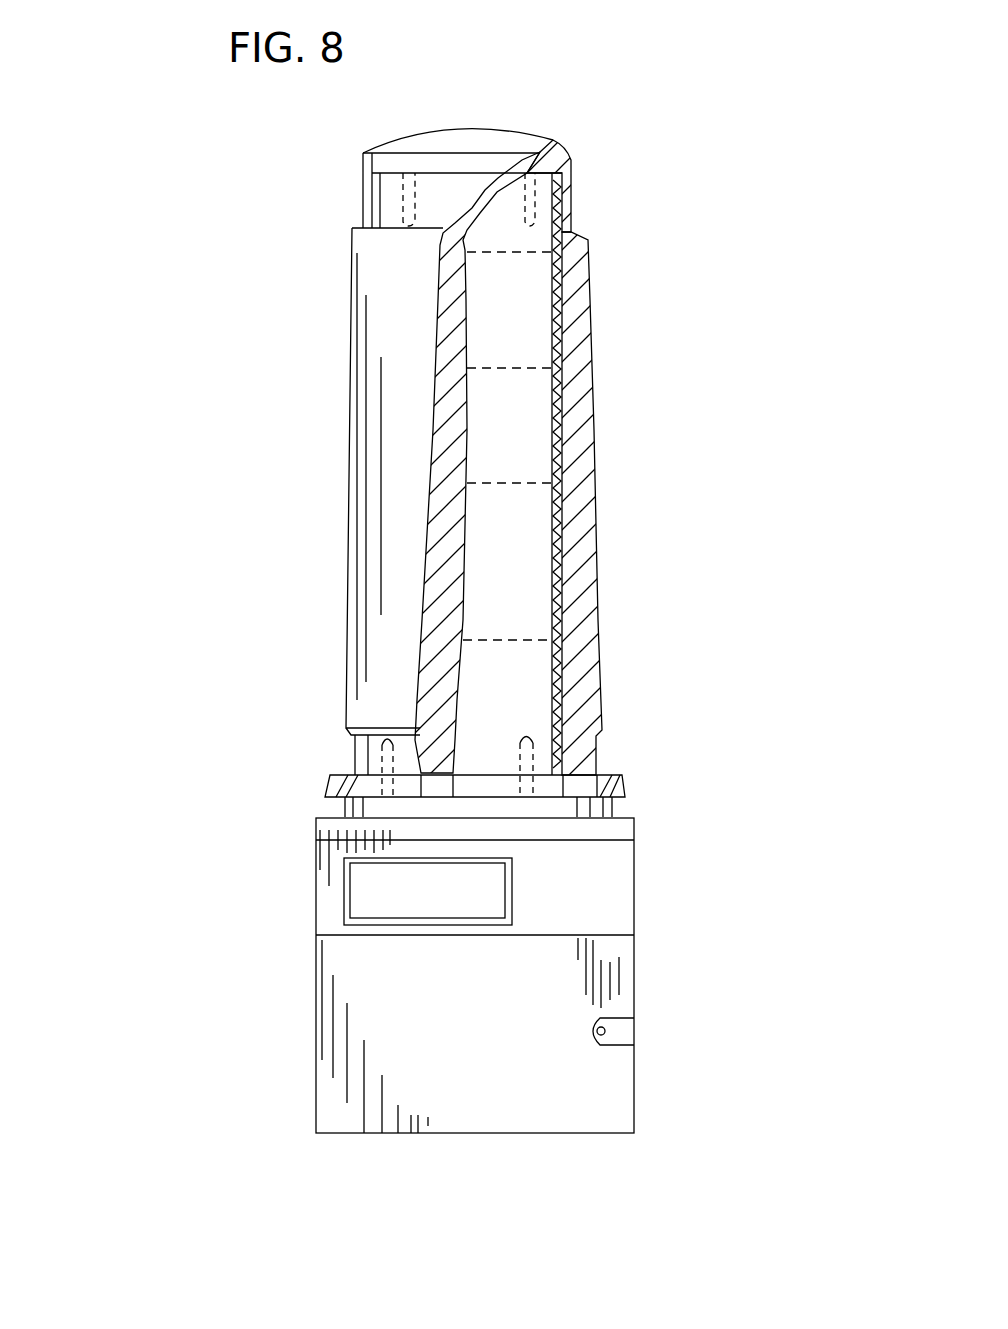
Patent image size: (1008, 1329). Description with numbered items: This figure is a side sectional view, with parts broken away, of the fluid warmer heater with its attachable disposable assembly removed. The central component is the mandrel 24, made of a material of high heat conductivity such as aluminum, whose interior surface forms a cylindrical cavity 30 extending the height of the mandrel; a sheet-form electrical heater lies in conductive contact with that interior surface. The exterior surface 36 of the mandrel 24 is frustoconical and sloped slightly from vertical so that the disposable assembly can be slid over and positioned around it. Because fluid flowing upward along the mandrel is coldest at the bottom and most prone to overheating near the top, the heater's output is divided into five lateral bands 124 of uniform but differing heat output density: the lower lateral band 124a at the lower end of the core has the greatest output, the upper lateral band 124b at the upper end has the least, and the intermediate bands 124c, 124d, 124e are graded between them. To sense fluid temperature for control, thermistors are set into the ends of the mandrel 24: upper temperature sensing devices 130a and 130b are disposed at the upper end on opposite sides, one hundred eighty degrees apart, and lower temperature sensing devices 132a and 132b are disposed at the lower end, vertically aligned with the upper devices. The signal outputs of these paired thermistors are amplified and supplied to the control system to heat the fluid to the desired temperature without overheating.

The mandrel 24 is at (350, 355).
The exterior surface 36 is at (390, 477).
The cylindrical cavity 30 is at (517, 455).
The lateral bands 124 is at (503, 598).
The lower lateral band 124a is at (517, 690).
The upper lateral band 124b is at (588, 241).
The intermediate lateral band 124c is at (517, 545).
The intermediate lateral band 124d is at (517, 395).
The intermediate lateral band 124e is at (517, 310).
The upper temperature sensing device 130a is at (535, 205).
The upper temperature sensing device 130b is at (403, 207).
The lower temperature sensing device 132a is at (545, 758).
The lower temperature sensing device 132b is at (382, 752).